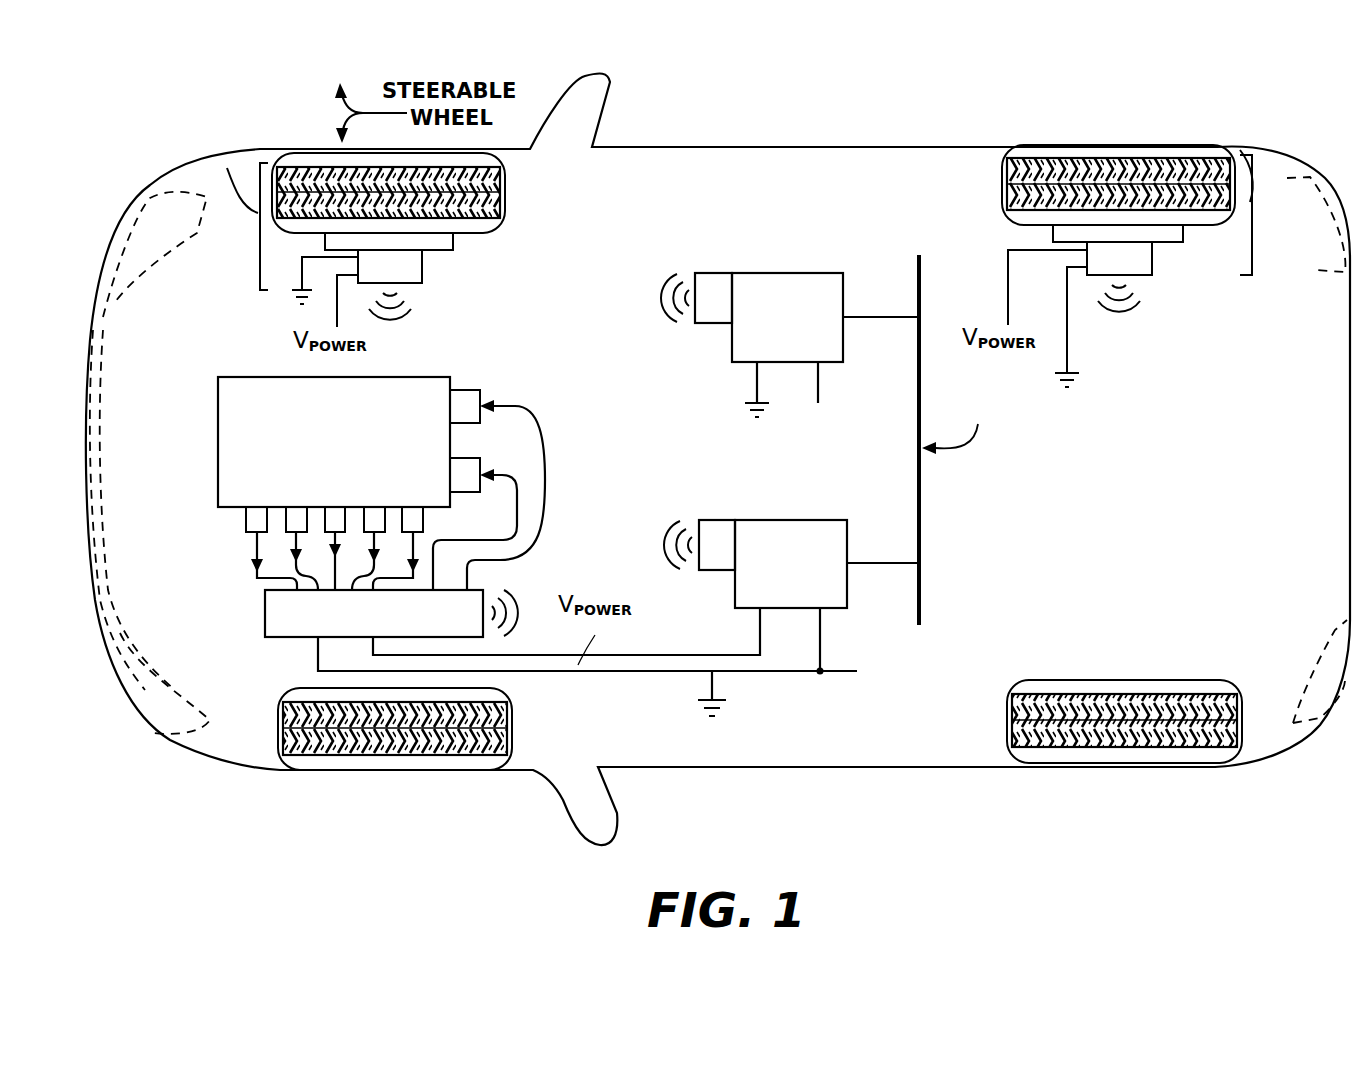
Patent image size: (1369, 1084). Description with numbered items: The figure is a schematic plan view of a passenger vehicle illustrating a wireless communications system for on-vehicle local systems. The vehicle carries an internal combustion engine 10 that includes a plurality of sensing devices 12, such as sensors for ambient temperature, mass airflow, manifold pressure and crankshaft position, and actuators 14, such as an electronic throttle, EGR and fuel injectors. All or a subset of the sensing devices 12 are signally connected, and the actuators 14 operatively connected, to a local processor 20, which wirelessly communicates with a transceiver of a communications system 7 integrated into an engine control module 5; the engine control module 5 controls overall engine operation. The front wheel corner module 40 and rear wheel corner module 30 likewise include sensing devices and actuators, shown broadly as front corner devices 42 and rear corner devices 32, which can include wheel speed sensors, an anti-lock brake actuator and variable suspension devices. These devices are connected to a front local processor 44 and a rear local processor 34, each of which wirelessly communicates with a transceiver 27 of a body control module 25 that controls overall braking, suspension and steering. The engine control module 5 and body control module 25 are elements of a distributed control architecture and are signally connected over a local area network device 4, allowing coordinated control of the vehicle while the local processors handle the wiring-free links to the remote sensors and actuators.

The local area network device 4 is at (921, 478).
The engine control module 5 is at (828, 564).
The communications system 7 is at (718, 570).
The internal combustion engine 10 is at (349, 442).
The sensing devices 12 is at (233, 580).
The actuators 14 is at (463, 375).
The local processor 20 is at (391, 613).
The body control module 25 is at (824, 352).
The transceiver 27 is at (713, 323).
The rear wheel corner module 30 is at (1252, 160).
The rear corner sensing devices and actuators 32 is at (1053, 232).
The rear local processor 34 is at (1152, 258).
The front wheel corner module 40 is at (258, 170).
The front corner sensing devices and actuators 42 is at (453, 240).
The front local processor 44 is at (422, 265).